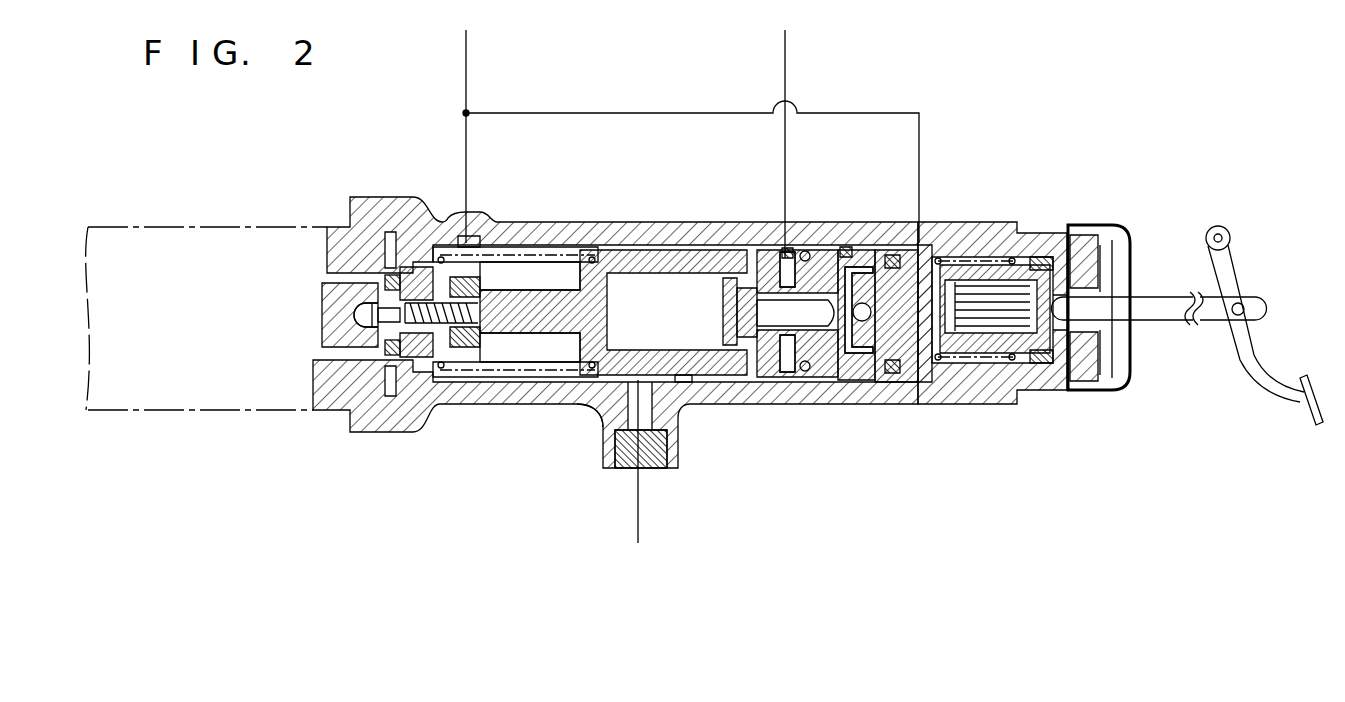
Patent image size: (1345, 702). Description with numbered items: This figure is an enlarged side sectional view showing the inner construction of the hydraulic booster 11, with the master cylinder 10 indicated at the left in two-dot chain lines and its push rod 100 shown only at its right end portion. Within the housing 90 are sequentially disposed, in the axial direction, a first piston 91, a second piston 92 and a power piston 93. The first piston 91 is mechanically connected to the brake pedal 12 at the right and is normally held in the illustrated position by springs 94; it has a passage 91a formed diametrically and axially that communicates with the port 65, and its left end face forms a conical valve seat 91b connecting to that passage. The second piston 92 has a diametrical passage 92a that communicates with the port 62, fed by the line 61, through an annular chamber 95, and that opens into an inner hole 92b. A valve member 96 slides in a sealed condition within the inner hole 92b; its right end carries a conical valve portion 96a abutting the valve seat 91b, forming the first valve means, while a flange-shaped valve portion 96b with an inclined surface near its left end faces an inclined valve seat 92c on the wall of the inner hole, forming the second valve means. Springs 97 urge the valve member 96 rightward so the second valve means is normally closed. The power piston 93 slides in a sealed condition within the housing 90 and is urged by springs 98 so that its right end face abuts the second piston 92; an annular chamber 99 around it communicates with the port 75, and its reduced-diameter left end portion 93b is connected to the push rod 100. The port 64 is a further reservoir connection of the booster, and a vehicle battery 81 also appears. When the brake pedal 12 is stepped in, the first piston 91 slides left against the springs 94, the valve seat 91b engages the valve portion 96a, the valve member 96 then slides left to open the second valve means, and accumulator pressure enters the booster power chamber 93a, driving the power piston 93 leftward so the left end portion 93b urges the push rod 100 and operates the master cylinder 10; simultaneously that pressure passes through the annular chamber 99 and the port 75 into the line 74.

The master cylinder 10 is at (218, 228).
The hydraulic booster 11 is at (704, 218).
The brake pedal 12 is at (1302, 417).
The line 61 is at (785, 80).
The port 62 is at (780, 245).
The port 64 is at (468, 240).
The port 65 is at (920, 245).
The line 74 is at (641, 516).
The port 75 is at (627, 465).
The vehicle battery 81 is at (466, 83).
The housing 90 is at (652, 230).
The first piston 91 is at (977, 352).
The passage 91a is at (922, 340).
The conical valve seat 91b is at (858, 300).
The second piston 92 is at (762, 383).
The passage 92a is at (809, 250).
The inner hole 92b is at (812, 380).
The valve seat 92c is at (780, 262).
The power piston 93 is at (757, 378).
The booster power chamber 93a is at (603, 407).
The left end portion 93b is at (537, 327).
The springs 94 is at (1007, 257).
The annular chamber 95 is at (846, 248).
The valve member 96 is at (830, 335).
The conical valve portion 96a is at (900, 330).
The flange-shaped valve portion 96b is at (772, 372).
The springs 97 is at (727, 337).
The springs 98 is at (555, 262).
The annular chamber 99 is at (683, 378).
The push rod 100 is at (327, 318).